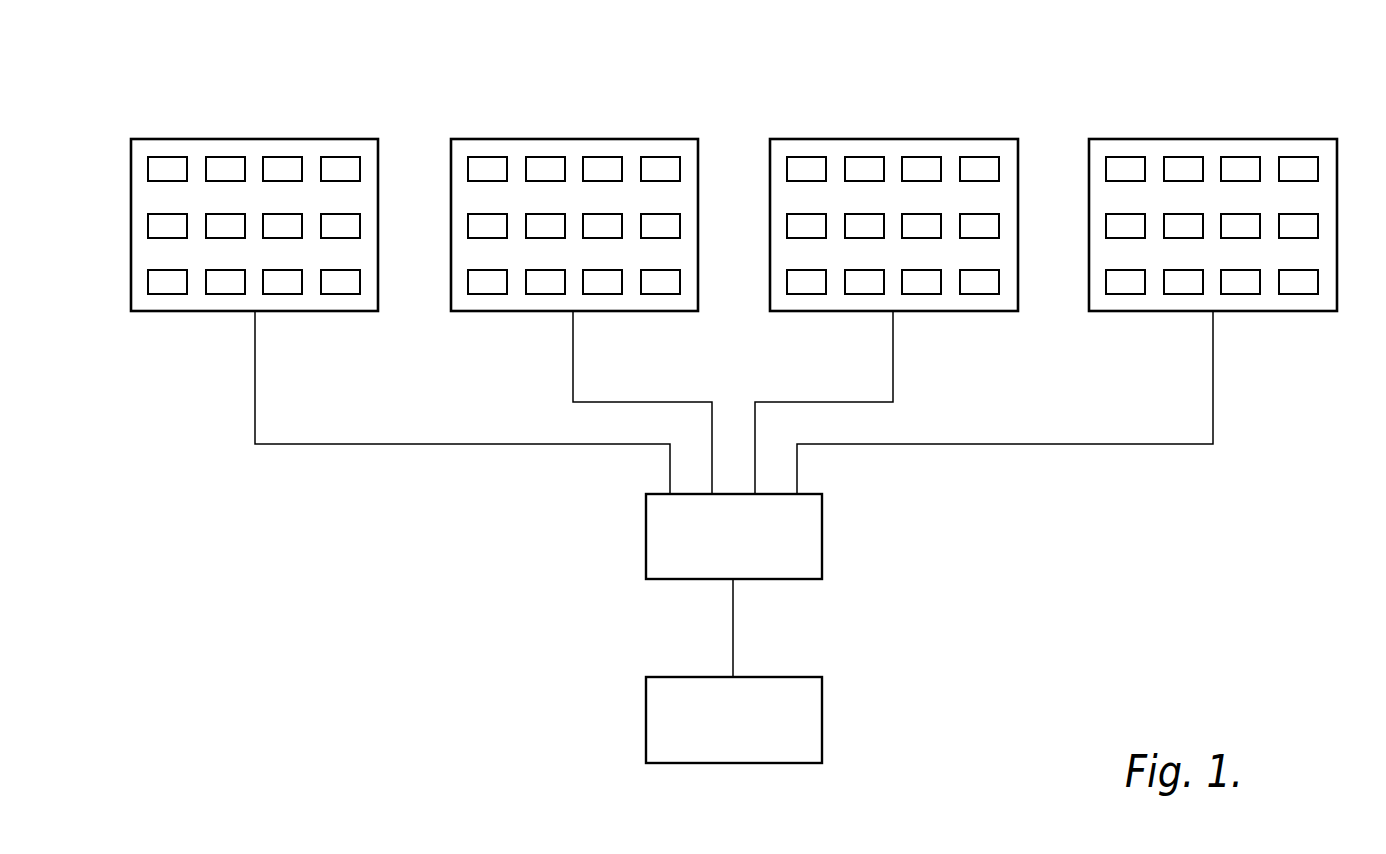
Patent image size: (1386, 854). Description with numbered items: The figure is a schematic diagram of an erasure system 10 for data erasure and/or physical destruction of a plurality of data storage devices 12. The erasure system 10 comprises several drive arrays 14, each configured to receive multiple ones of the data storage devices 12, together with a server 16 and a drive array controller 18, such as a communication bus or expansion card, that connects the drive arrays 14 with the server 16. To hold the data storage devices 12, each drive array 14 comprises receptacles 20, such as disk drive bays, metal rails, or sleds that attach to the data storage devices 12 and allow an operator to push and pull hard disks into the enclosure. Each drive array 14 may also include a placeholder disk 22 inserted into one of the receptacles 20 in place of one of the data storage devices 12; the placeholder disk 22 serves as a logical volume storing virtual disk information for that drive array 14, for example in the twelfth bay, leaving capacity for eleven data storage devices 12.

The erasure system 10 is at (951, 78).
The data storage device 12 is at (158, 230).
The drive array 14 is at (159, 140).
The server 16 is at (815, 716).
The drive array controller 18 is at (820, 534).
The receptacle 20 is at (228, 158).
The placeholder disk 22 is at (348, 281).